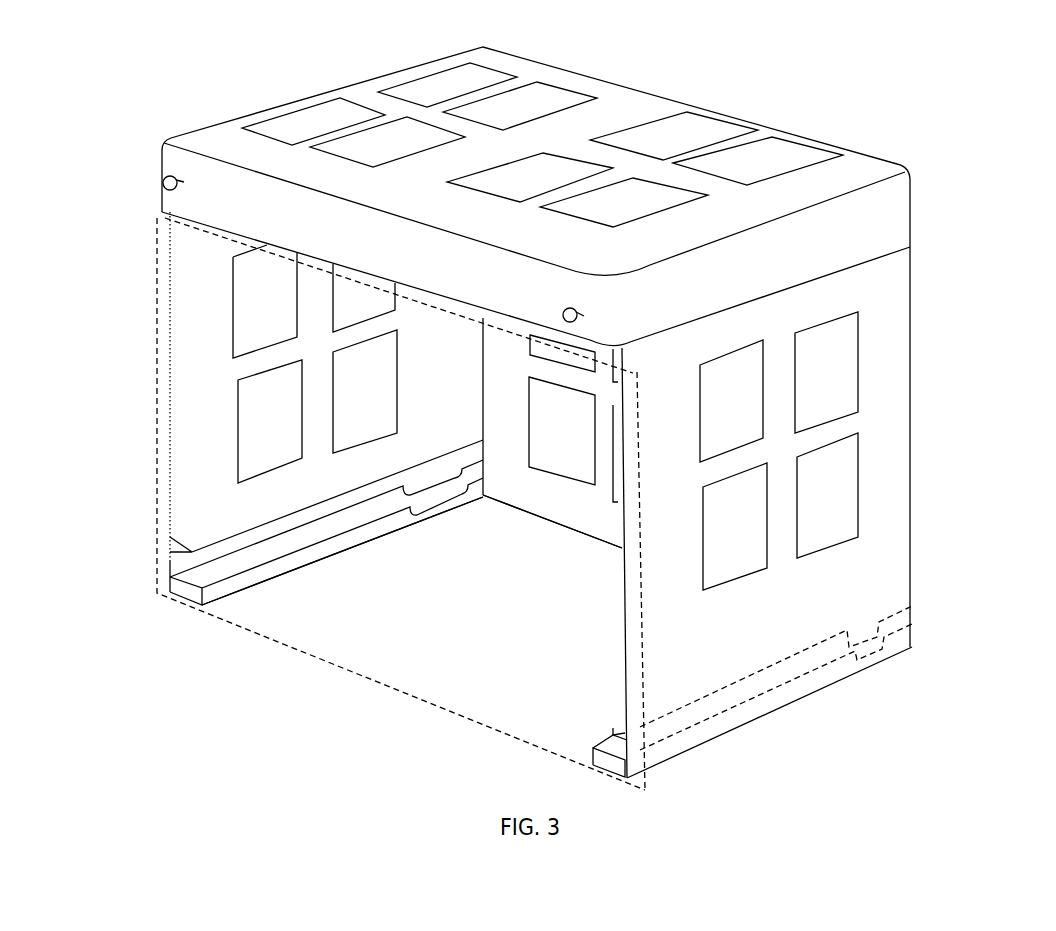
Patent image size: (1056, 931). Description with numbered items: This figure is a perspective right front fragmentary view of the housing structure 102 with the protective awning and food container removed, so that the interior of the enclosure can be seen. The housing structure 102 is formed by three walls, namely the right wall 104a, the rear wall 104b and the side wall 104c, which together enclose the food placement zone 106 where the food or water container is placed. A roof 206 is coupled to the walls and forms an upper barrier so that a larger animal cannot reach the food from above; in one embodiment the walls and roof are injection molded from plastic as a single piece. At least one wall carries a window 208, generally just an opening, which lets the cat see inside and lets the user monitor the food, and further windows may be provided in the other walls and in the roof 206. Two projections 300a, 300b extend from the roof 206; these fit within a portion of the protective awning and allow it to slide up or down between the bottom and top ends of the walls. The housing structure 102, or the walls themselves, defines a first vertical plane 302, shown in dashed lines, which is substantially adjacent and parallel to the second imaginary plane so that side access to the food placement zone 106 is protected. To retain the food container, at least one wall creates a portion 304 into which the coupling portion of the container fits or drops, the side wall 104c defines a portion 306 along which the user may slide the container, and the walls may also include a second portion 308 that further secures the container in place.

The housing structure 102 is at (898, 550).
The right wall 104a is at (786, 628).
The wall 104b is at (608, 519).
The side wall 104c is at (460, 415).
The food placement zone 106 is at (547, 619).
The roof 206 is at (888, 195).
The window 208 is at (848, 472).
The projection 300a is at (576, 318).
The projection 300b is at (163, 185).
The first vertical plane 302 is at (437, 638).
The portion 304 is at (440, 495).
The portion 306 is at (183, 563).
The second portion 308 is at (873, 647).